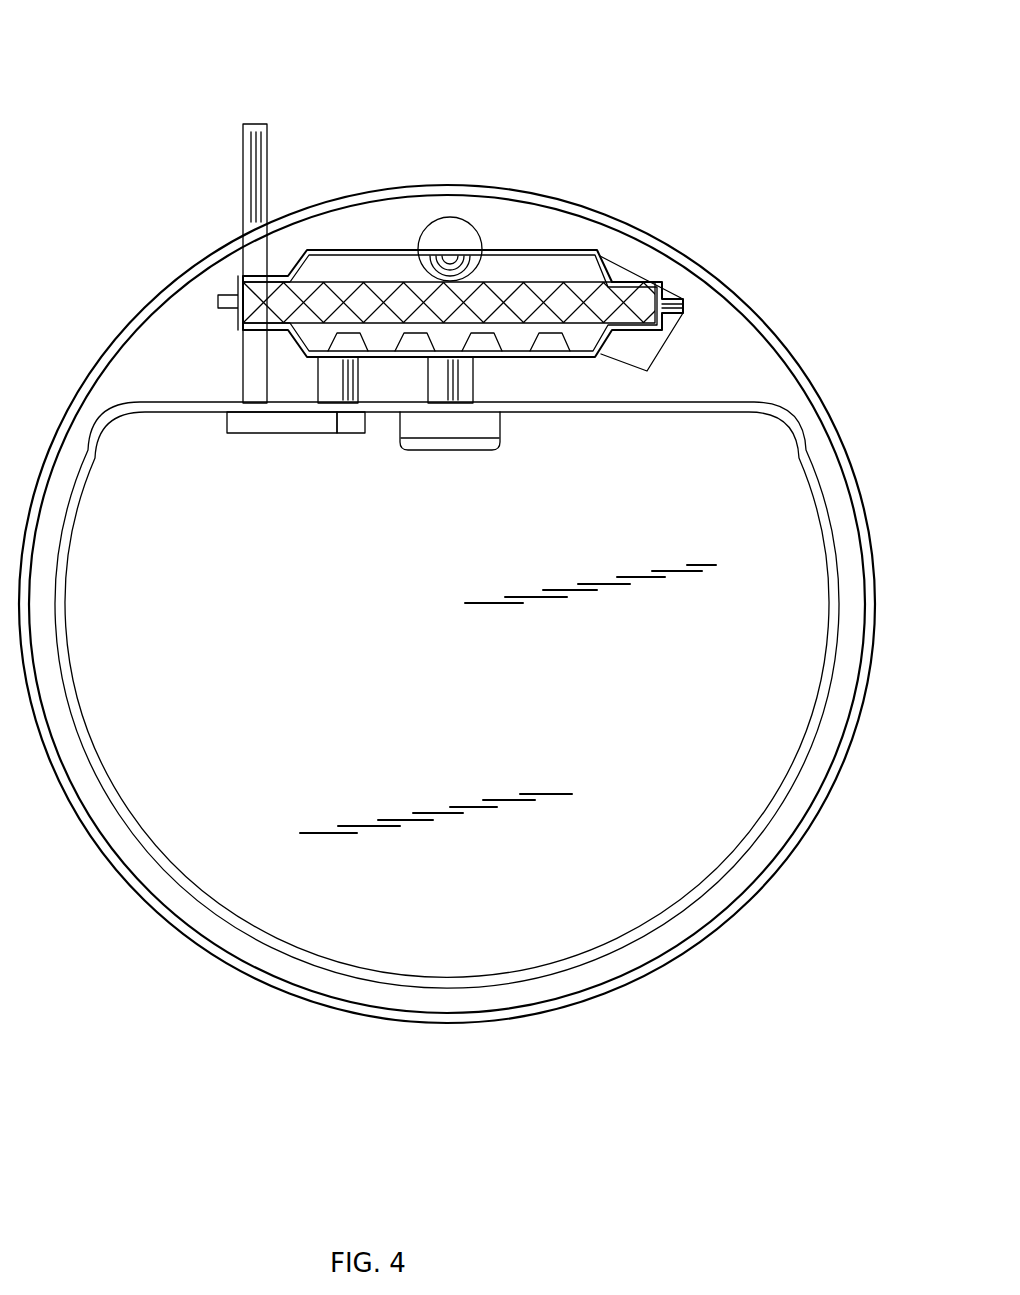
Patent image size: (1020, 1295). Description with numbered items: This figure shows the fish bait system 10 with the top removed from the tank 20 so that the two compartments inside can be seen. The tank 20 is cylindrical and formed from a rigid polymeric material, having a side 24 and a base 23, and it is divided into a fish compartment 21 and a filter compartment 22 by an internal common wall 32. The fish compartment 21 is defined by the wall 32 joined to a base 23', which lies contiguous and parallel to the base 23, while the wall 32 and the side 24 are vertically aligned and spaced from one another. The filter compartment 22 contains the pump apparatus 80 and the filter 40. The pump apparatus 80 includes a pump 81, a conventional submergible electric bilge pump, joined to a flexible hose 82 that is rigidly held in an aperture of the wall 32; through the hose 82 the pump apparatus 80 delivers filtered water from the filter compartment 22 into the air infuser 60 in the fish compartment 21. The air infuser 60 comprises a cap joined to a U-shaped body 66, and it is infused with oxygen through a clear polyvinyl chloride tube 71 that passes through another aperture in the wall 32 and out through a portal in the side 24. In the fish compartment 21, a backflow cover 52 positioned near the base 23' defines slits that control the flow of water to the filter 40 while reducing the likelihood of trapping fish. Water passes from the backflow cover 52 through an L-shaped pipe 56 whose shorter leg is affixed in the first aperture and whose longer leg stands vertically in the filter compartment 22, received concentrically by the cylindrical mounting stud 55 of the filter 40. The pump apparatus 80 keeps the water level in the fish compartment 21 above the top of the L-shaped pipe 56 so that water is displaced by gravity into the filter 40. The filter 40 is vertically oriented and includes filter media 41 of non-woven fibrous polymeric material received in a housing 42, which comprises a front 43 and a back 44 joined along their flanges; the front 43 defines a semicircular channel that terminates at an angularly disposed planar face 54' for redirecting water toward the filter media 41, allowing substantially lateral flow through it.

The tank assembly 10 is at (835, 66).
The tank 20 is at (453, 660).
The fish compartment 21 is at (768, 476).
The filter compartment 22 is at (770, 381).
The base 23 is at (159, 361).
The base 23' is at (508, 699).
The side 24 is at (688, 957).
The internal common wall 32 is at (471, 695).
The filter 40 is at (475, 293).
The filter media 41 is at (255, 290).
The housing 42 is at (503, 247).
The front 43 is at (549, 233).
The back 44 is at (596, 383).
The backflow cover 52 is at (487, 433).
The planar face 54' is at (450, 203).
The mounting stud 55 is at (403, 255).
The L-shaped pipe 56 is at (455, 262).
The air infuser 60 is at (285, 470).
The U-shaped body 66 is at (247, 423).
The tube 71 is at (250, 168).
The pump apparatus 80 is at (705, 332).
The pump 81 is at (642, 355).
The hose 82 is at (301, 381).